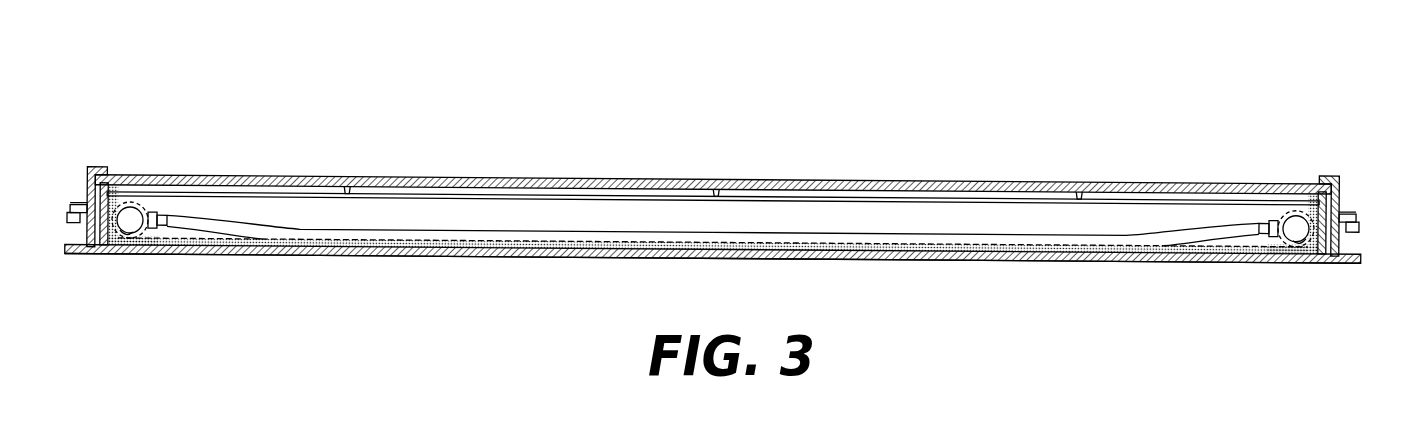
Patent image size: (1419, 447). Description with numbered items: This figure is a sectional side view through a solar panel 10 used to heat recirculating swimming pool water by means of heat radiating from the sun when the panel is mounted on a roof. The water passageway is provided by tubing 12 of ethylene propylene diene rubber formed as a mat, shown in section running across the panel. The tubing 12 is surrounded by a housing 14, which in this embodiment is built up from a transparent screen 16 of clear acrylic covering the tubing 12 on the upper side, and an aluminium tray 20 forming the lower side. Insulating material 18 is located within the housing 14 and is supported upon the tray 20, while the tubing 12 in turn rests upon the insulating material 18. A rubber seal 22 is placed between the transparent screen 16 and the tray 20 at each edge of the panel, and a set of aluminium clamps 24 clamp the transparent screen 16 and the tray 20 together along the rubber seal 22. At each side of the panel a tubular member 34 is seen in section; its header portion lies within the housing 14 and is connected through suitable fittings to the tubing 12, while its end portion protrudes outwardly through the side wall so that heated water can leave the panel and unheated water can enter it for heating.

The solar panel 10 is at (977, 151).
The tubing 12 is at (803, 237).
The housing 14 is at (414, 262).
The transparent screen 16 is at (557, 195).
The insulating material 18 is at (1012, 250).
The tray 20 is at (1173, 260).
The rubber seal 22 is at (118, 202).
The clamps 24 is at (78, 200).
The tubular member 34 is at (128, 228).